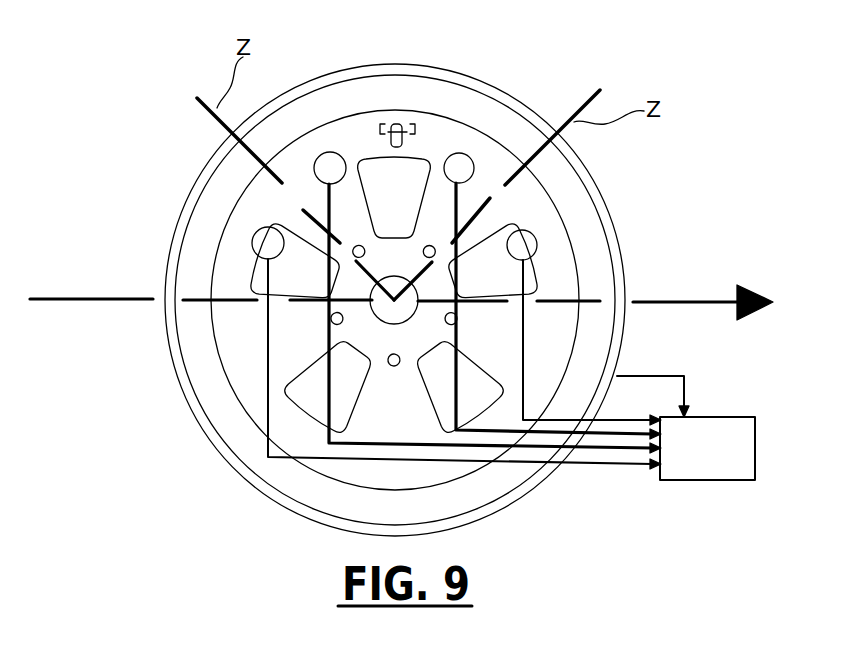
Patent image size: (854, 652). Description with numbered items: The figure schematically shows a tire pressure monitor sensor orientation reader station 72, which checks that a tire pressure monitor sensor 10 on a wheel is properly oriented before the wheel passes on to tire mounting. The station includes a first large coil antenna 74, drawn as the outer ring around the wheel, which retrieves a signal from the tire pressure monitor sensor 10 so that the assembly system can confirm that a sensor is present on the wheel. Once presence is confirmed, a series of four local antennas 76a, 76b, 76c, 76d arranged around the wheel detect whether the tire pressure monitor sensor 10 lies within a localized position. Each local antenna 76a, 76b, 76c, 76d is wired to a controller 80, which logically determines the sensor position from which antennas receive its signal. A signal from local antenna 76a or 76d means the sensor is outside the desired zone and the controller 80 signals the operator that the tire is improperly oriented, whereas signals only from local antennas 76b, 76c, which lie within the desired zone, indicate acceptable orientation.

The tire pressure monitor sensor 10 is at (395, 120).
The tire pressure monitor sensor orientation reader station 72 is at (148, 433).
The first large coil antenna 74 is at (627, 250).
The local antenna 76a is at (265, 241).
The local antenna 76b is at (333, 162).
The local antenna 76c is at (463, 162).
The local antenna 76d is at (535, 242).
The controller 80 is at (748, 432).